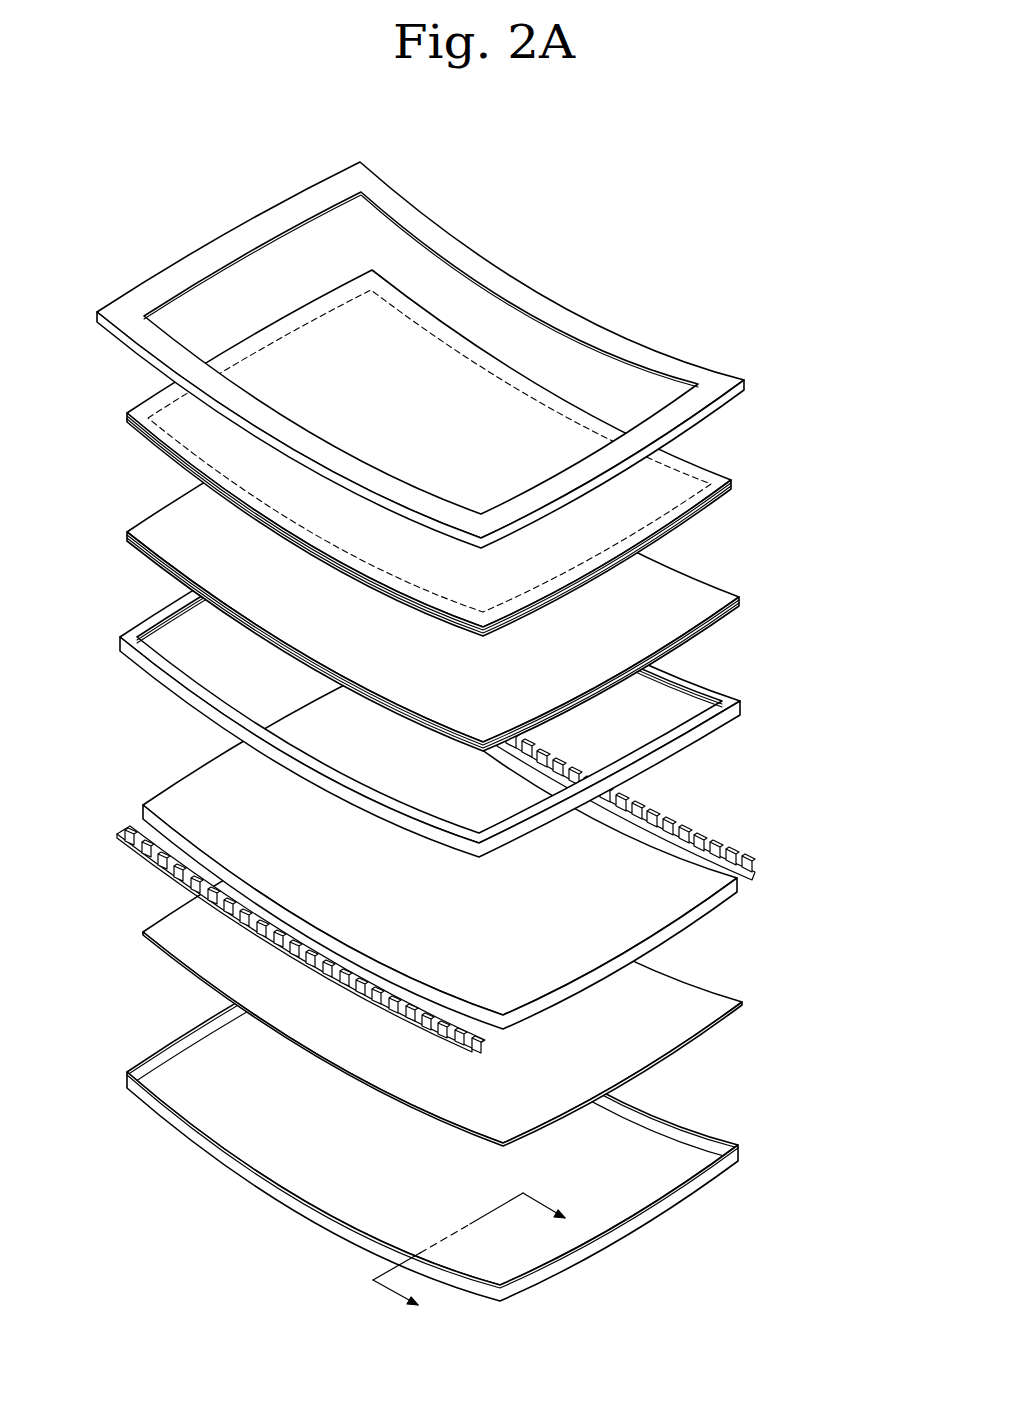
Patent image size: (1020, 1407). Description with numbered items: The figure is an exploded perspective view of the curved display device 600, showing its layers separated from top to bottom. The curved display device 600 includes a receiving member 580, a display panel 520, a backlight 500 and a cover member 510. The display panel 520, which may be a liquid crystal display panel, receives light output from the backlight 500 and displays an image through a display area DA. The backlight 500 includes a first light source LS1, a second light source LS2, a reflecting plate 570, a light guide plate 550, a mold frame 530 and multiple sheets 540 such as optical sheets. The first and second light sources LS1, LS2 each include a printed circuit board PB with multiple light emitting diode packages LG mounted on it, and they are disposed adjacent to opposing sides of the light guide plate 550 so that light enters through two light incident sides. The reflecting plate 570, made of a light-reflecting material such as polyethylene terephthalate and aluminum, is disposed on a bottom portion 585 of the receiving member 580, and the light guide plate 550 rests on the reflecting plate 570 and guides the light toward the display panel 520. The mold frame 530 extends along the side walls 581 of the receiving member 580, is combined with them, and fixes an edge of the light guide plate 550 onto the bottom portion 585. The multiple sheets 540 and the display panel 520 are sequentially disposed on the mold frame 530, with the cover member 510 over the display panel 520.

The curved display device 600 is at (558, 212).
The cover member 510 is at (580, 322).
The display area DA is at (168, 407).
The display panel 520 is at (456, 453).
The multiple sheets 540 is at (742, 598).
The mold frame 530 is at (730, 717).
The backlight 500 is at (832, 478).
The first light source LS1 is at (664, 805).
The light emitting diode packages LG is at (677, 823).
The printed circuit board PB is at (698, 840).
The second light source LS2 is at (157, 878).
The light guide plate 550 is at (709, 906).
The reflecting plate 570 is at (739, 1005).
The receiving member 580 is at (478, 1126).
The side walls 581 is at (303, 1207).
The bottom portion 585 is at (620, 1208).